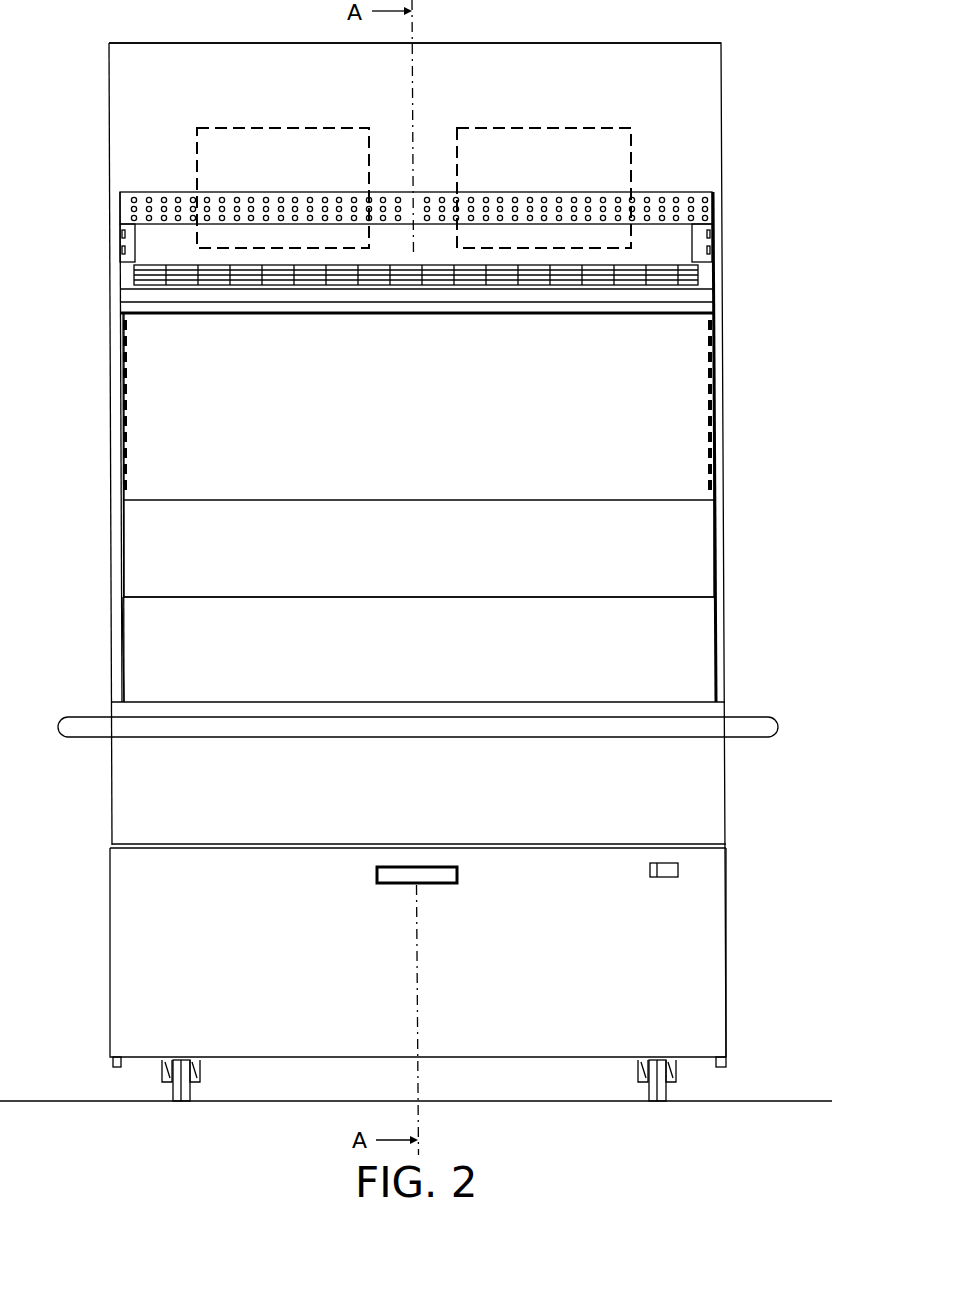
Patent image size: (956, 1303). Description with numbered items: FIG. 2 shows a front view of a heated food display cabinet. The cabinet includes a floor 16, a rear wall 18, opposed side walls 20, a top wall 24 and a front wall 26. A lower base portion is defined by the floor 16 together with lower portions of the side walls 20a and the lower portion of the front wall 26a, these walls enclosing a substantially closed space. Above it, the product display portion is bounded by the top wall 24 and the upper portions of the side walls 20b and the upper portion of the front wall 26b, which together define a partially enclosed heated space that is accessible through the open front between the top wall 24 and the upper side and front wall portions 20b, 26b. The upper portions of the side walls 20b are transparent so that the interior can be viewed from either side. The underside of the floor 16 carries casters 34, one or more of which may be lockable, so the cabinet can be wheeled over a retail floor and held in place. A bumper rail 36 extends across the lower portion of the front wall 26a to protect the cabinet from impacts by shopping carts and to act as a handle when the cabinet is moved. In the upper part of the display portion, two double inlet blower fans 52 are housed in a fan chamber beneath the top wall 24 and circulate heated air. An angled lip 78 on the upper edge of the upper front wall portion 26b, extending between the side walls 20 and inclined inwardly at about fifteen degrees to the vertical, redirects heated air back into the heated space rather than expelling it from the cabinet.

The floor 16 is at (530, 1060).
The rear wall 18 is at (428, 396).
The side walls 20 is at (723, 290).
The lower portions of the side walls 20a is at (110, 935).
The upper portions of the side walls 20b is at (110, 272).
The top wall 24 is at (516, 52).
The front wall 26 is at (200, 844).
The lower portion of the front wall 26a is at (712, 933).
The upper portion of the front wall 26b is at (712, 657).
The casters 34 is at (182, 1103).
The bumper rail 36 is at (750, 738).
The blower fans 52 is at (196, 142).
The angled lip 78 is at (200, 498).